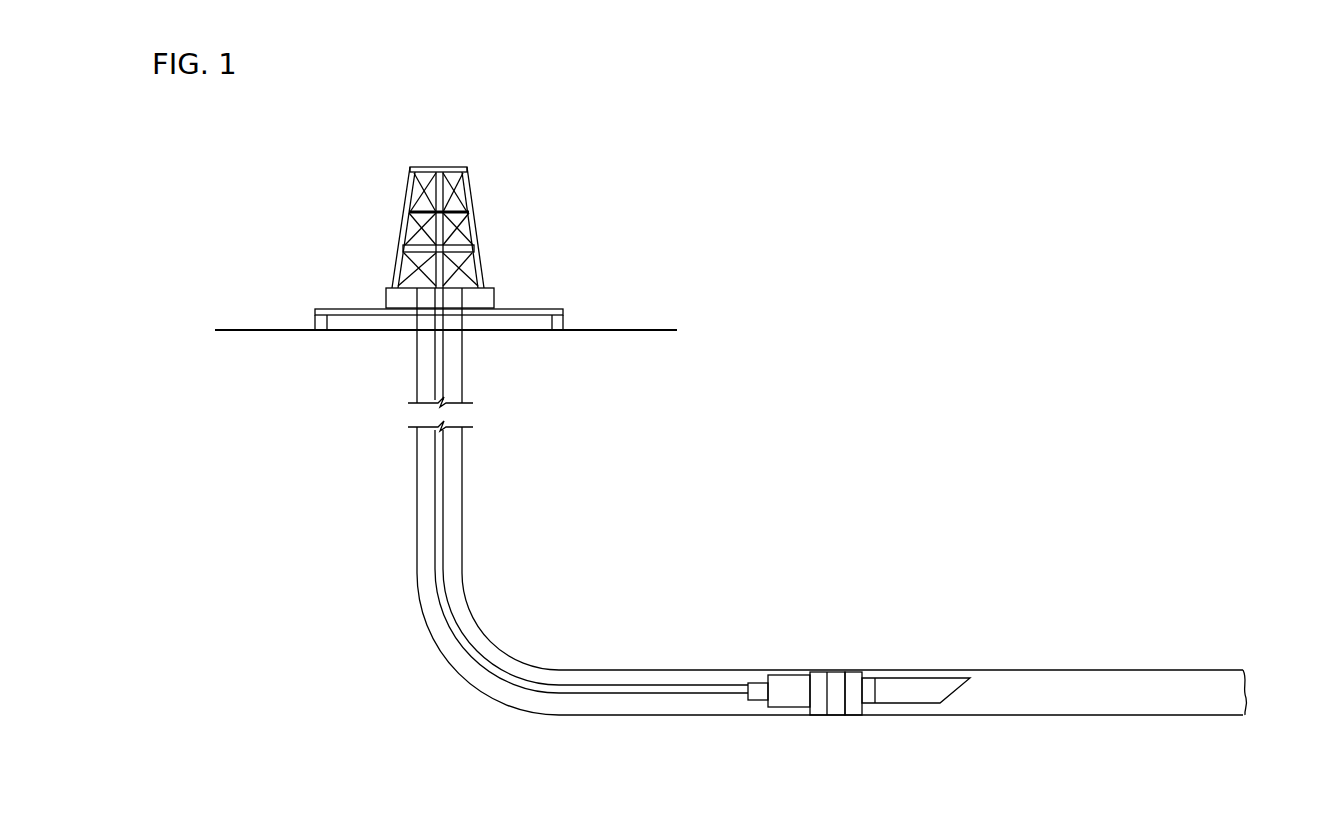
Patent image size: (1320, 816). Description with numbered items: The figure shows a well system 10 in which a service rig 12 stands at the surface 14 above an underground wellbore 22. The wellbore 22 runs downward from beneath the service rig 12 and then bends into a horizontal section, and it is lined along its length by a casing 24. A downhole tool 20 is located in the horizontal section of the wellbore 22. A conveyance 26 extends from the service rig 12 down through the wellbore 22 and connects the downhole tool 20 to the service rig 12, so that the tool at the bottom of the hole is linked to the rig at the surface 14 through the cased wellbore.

The well system 10 is at (948, 280).
The service rig 12 is at (468, 193).
The surface 14 is at (602, 330).
The downhole tool 20 is at (835, 683).
The wellbore 22 is at (464, 487).
The casing 24 is at (463, 535).
The conveyance 26 is at (500, 677).